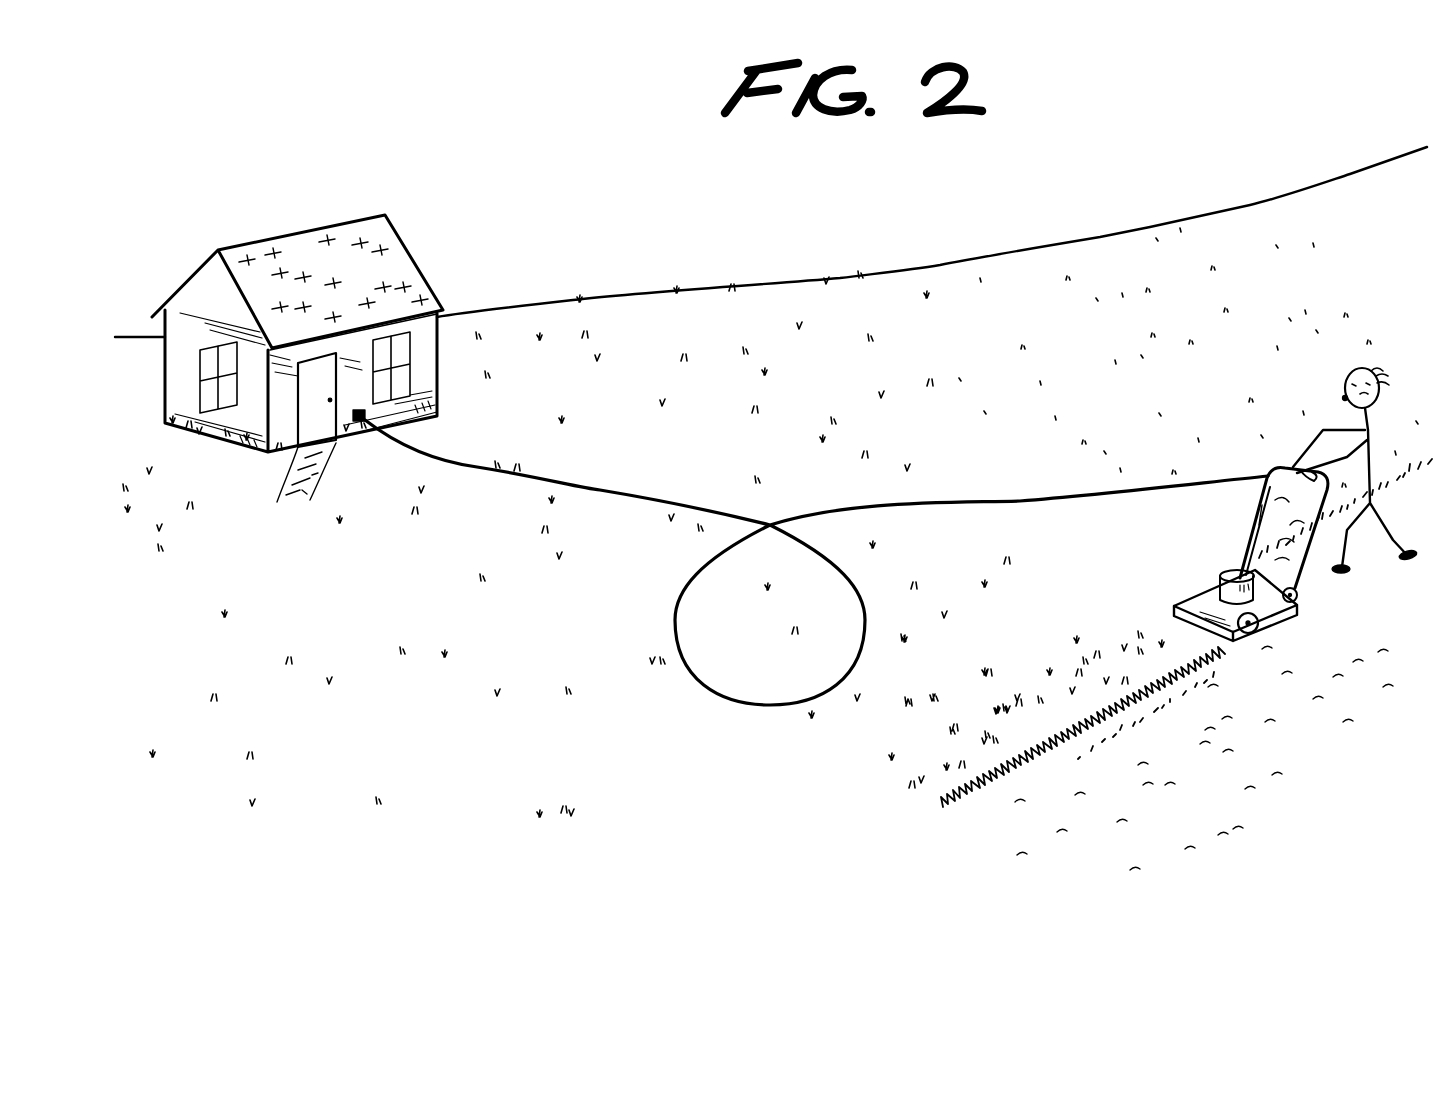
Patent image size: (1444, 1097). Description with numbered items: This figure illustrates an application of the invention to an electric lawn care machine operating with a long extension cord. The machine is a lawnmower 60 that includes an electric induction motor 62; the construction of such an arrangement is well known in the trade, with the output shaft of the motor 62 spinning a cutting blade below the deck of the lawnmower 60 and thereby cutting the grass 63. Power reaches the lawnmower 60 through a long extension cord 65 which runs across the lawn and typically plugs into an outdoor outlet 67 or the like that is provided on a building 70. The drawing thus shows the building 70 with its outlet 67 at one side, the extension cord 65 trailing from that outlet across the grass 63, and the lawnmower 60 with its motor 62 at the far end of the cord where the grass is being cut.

The lawnmower 60 is at (1213, 554).
The electric induction motor 62 is at (1173, 606).
The grass 63 is at (1002, 289).
The extension cord 65 is at (676, 494).
The outdoor outlet 67 is at (371, 449).
The building 70 is at (344, 222).